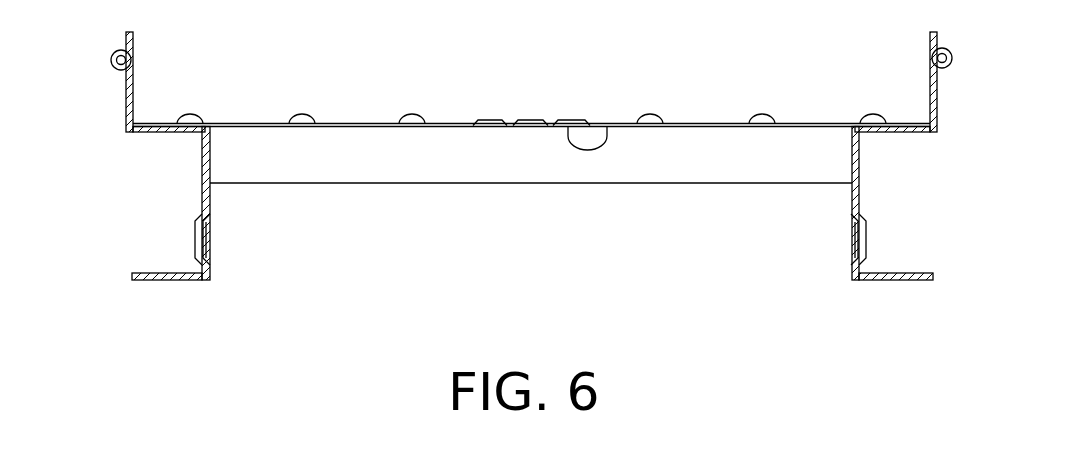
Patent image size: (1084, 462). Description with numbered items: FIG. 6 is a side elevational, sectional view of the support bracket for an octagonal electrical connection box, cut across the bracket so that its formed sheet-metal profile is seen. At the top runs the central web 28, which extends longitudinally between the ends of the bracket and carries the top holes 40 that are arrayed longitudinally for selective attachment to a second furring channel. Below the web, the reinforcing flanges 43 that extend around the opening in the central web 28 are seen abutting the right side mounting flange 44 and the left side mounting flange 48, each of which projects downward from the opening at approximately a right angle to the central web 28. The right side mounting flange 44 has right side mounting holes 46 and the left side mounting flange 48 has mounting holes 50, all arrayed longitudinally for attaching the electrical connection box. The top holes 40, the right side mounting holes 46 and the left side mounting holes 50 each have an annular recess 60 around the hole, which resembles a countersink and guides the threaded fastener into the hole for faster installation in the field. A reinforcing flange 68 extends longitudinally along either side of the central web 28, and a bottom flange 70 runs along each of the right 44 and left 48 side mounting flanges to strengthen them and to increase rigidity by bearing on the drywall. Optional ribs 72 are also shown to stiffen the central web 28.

The central web 28 is at (803, 124).
The top holes 40 is at (607, 126).
The reinforcing flanges 43 is at (672, 165).
The right side mounting flange 44 is at (852, 200).
The right side mounting holes 46 is at (852, 240).
The left side mounting flange 48 is at (202, 195).
The mounting holes 50 is at (210, 240).
The annular recess 60 is at (491, 120).
The reinforcing flange 68 is at (126, 108).
The bottom flange 70 is at (170, 282).
The ribs 72 is at (117, 52).